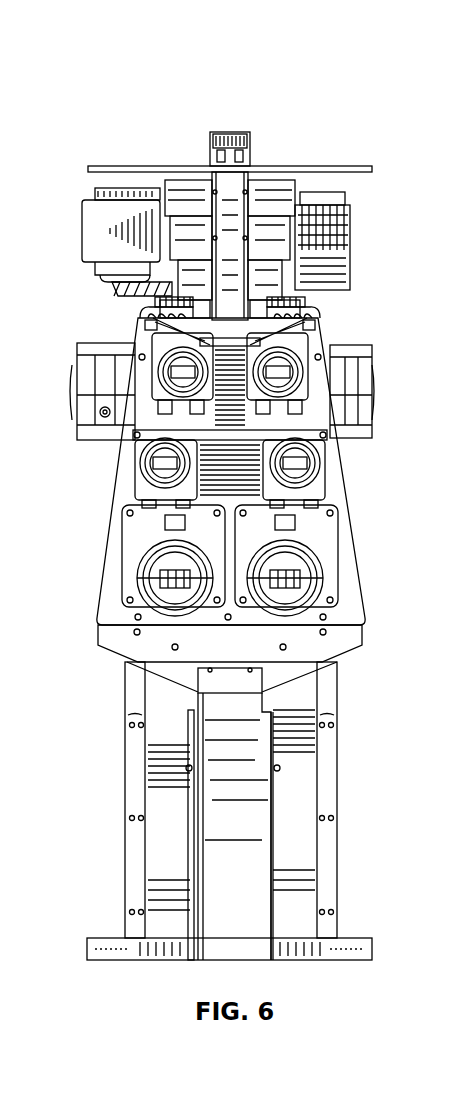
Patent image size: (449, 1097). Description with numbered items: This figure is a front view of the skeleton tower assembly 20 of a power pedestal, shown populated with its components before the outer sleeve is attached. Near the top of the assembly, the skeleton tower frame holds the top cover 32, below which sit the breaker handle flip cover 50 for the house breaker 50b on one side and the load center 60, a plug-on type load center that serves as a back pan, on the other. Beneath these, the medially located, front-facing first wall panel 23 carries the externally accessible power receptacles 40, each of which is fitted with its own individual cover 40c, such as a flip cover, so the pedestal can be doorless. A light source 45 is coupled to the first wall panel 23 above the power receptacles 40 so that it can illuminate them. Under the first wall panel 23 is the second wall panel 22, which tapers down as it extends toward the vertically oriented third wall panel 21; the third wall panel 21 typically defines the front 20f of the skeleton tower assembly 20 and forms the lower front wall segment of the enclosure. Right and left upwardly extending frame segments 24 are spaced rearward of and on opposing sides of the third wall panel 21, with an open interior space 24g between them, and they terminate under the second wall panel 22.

The skeleton tower assembly 20 is at (97, 92).
The front 20f is at (448, 1032).
The third wall panel 21 is at (248, 820).
The second wall panel 22 is at (230, 659).
The first wall panel 23 is at (227, 457).
The frame segments 24 is at (128, 815).
The open interior space 24g is at (168, 855).
The top cover 32 is at (148, 166).
The power receptacles 40 is at (325, 577).
The covers 40c is at (160, 474).
The light source 45 is at (175, 320).
The breaker handle flip cover 50 is at (115, 222).
The house breaker 50b is at (110, 278).
The load center 60 is at (345, 248).